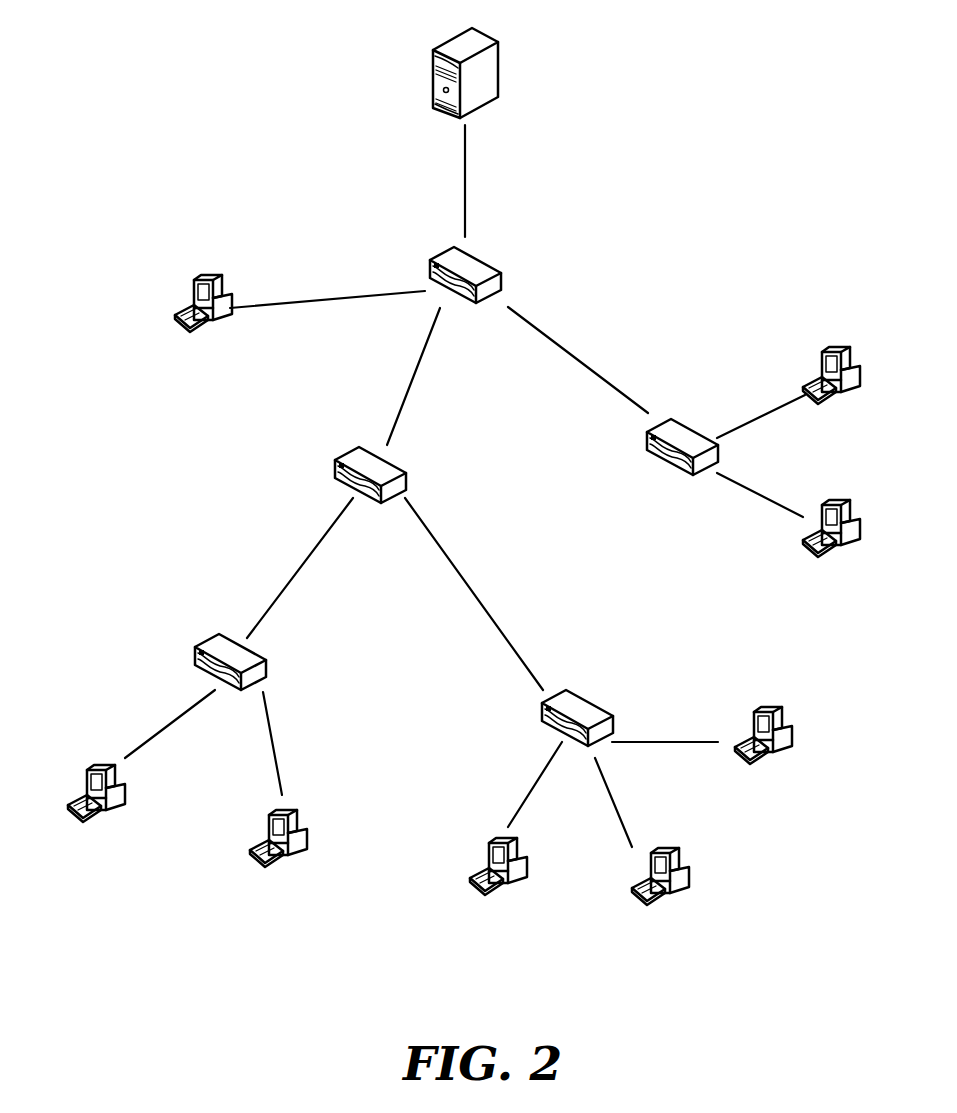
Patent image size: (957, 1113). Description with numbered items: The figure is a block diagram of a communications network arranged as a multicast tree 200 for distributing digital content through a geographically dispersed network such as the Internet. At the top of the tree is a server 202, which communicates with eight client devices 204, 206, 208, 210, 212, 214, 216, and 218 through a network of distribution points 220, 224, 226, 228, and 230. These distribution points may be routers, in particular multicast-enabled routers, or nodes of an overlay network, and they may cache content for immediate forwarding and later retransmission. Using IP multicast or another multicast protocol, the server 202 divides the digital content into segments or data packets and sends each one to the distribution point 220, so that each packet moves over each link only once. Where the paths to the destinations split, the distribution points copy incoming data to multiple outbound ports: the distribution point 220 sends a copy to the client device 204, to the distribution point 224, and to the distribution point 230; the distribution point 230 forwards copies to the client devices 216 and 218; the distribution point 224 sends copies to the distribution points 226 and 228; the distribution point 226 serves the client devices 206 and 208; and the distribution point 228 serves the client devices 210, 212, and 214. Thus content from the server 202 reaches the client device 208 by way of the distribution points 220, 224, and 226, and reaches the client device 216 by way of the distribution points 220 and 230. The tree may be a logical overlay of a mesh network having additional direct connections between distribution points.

The multicast tree 200 is at (721, 132).
The server 202 is at (490, 37).
The client device 204 is at (210, 272).
The client device 206 is at (90, 760).
The client device 208 is at (285, 813).
The client device 210 is at (512, 842).
The client device 212 is at (667, 848).
The client device 214 is at (772, 703).
The client device 216 is at (828, 497).
The client device 218 is at (827, 342).
The distribution point 220 is at (488, 263).
The distribution point 224 is at (388, 460).
The distribution point 226 is at (253, 655).
The distribution point 228 is at (593, 700).
The distribution point 230 is at (683, 425).